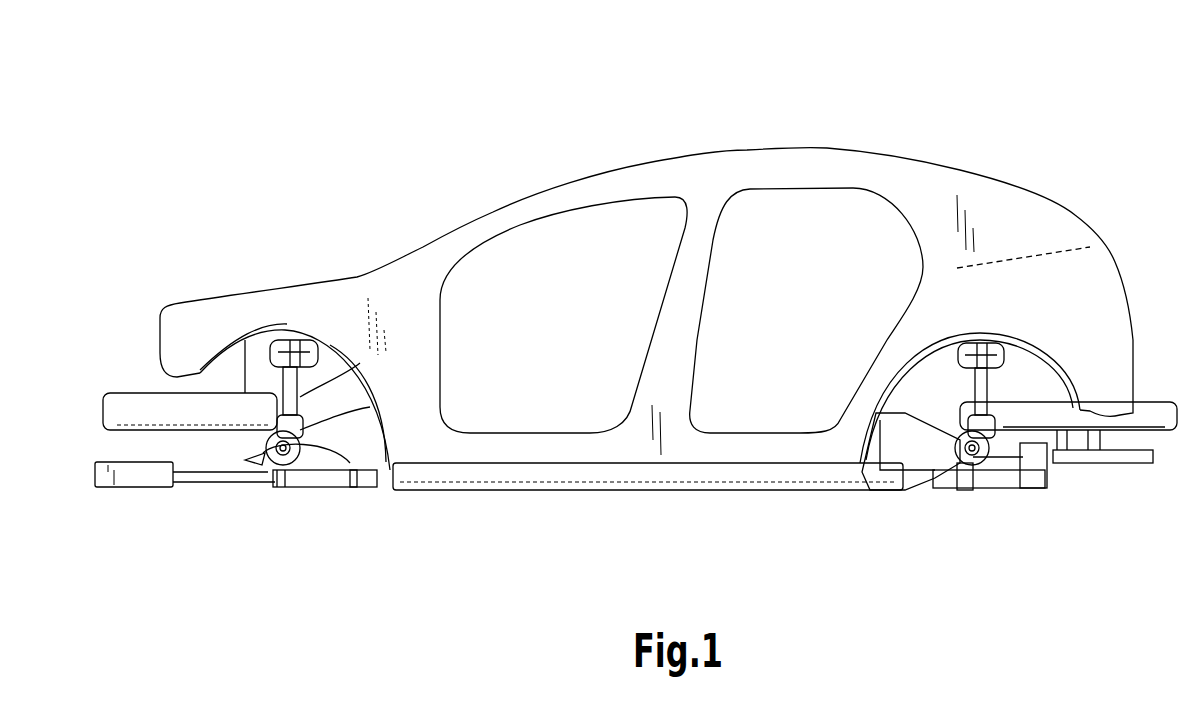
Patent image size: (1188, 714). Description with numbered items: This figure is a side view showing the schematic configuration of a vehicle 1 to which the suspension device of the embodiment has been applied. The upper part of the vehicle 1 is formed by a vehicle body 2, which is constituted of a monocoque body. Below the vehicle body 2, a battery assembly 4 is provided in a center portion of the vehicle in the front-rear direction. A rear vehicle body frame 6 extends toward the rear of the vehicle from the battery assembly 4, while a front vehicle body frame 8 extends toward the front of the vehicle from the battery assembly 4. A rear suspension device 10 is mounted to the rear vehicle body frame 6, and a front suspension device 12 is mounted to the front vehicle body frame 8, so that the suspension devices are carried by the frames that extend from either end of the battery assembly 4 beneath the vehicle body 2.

The vehicle 1 is at (286, 105).
The vehicle body 2 is at (895, 157).
The battery assembly 4 is at (543, 490).
The rear vehicle body frame 6 is at (912, 488).
The front vehicle body frame 8 is at (215, 482).
The rear suspension device 10 is at (988, 500).
The front suspension device 12 is at (293, 503).